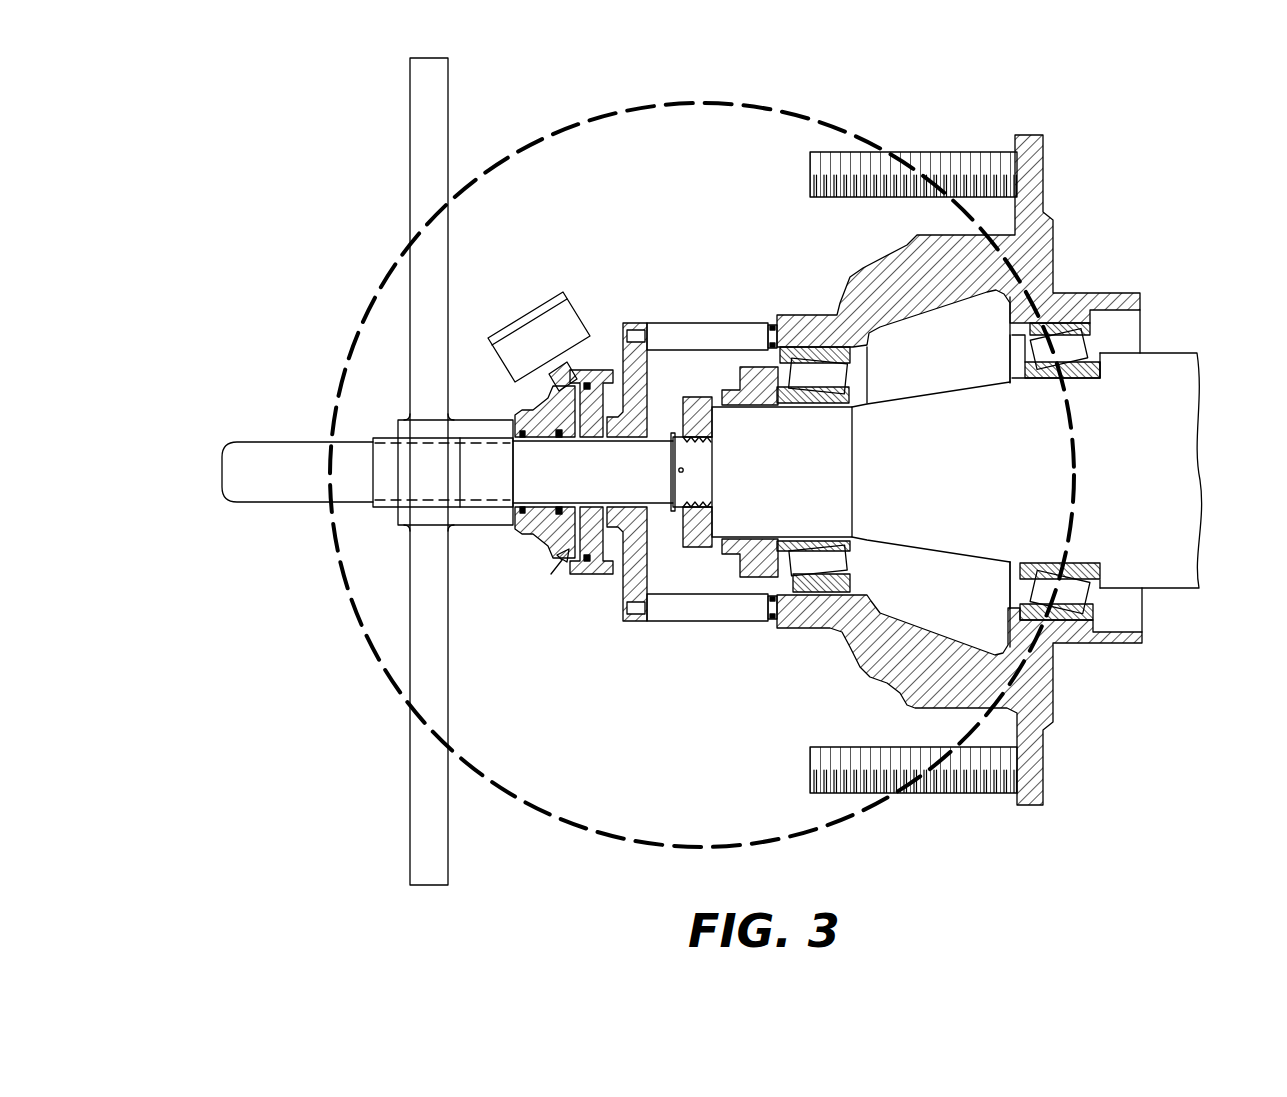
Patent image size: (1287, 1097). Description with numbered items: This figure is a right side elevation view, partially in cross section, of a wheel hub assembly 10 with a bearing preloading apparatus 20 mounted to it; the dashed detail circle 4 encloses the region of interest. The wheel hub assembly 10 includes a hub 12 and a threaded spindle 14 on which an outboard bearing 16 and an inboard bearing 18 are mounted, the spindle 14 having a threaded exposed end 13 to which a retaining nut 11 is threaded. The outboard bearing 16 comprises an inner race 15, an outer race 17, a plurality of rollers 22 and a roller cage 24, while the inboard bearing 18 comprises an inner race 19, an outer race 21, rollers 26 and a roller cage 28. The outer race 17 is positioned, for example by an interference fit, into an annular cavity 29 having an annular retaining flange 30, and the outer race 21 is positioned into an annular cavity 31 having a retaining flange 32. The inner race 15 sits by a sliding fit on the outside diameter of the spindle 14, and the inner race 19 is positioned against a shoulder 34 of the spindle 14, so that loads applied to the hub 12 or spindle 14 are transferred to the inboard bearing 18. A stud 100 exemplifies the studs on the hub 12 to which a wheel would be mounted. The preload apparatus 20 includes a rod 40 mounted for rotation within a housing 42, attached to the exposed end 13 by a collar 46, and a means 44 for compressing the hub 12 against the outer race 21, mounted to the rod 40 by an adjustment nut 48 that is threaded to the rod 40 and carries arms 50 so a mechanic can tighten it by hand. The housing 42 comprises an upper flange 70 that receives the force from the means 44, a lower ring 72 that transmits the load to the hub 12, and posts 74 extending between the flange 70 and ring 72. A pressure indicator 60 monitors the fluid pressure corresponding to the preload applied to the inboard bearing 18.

The detail circle 4 is at (360, 332).
The wheel hub assembly 10 is at (800, 222).
The retaining nut 11 is at (722, 570).
The hub 12 is at (870, 275).
The exposed end 13 is at (718, 487).
The spindle 14 is at (840, 472).
The inner race 15 is at (806, 404).
The outboard bearing 16 is at (830, 415).
The outer race 17 is at (832, 345).
The inboard bearing 18 is at (1026, 403).
The inner race 19 is at (1079, 382).
The bearing preloading apparatus 20 is at (690, 222).
The outer race 21 is at (1025, 340).
The rollers 22 is at (805, 360).
The roller cage 24 is at (858, 562).
The rollers 26 is at (1073, 340).
The roller cage 28 is at (1098, 600).
The annular cavity 29 is at (856, 617).
The annular retaining flange 30 is at (870, 586).
The annular cavity 31 is at (1066, 625).
The retaining flange 32 is at (1010, 616).
The shoulder 34 is at (1100, 366).
The rod 40 is at (281, 492).
The housing 42 is at (697, 313).
The means for compressing 44 is at (548, 594).
The collar 46 is at (682, 410).
The adjustment nut 48 is at (487, 520).
The arms 50 is at (410, 147).
The pressure indicator 60 is at (513, 326).
The upper flange 70 is at (632, 322).
The ring 72 is at (770, 623).
The posts 74 is at (702, 623).
The stud 100 is at (922, 150).